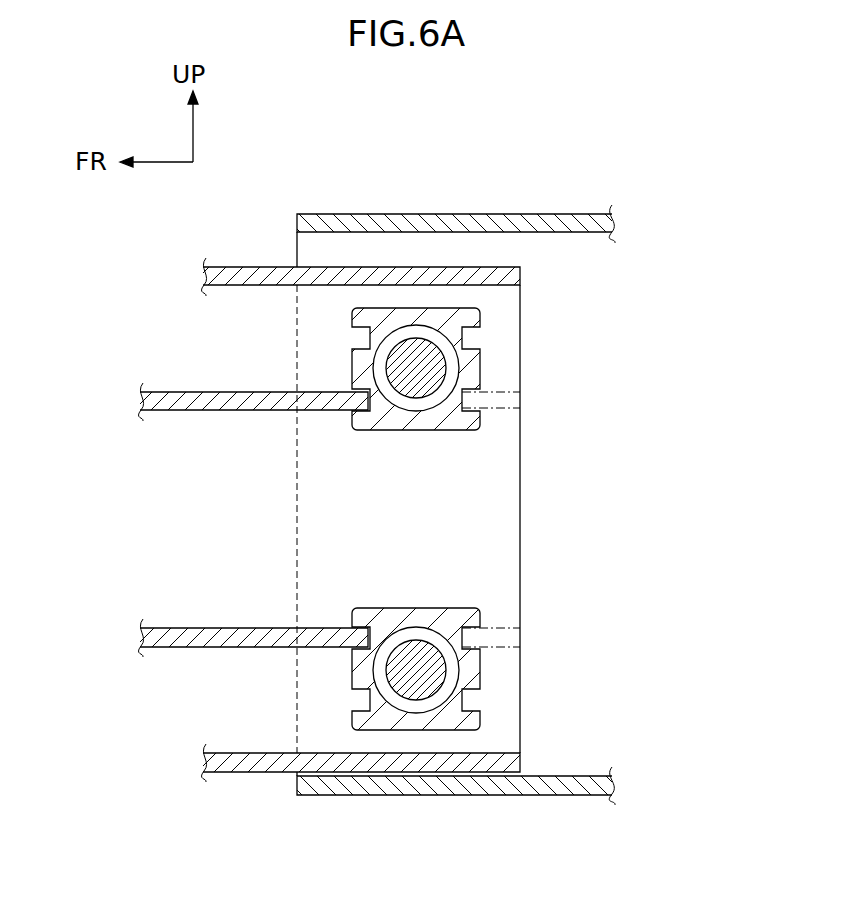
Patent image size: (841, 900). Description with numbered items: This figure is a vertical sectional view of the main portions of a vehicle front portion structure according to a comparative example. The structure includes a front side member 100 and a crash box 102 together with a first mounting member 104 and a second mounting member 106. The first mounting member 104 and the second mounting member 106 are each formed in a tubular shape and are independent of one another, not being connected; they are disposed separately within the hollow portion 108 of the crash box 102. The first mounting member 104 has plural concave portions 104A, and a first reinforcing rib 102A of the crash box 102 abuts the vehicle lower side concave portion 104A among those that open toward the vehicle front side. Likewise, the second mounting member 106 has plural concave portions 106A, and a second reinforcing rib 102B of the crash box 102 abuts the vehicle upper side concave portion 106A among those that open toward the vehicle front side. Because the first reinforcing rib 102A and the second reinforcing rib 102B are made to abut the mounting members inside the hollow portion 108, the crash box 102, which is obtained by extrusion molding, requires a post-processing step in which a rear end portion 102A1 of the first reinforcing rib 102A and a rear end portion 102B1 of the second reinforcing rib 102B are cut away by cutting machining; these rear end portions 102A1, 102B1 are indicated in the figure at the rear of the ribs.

The front side member 100 is at (503, 202).
The crash box 102 is at (246, 238).
The first reinforcing rib 102A is at (168, 390).
The rear end portion of the first reinforcing rib 102A1 is at (486, 410).
The second reinforcing rib 102B is at (162, 650).
The rear end portion of the second reinforcing rib 102B1 is at (485, 650).
The first mounting member 104 is at (423, 370).
The concave portion 104A is at (365, 337).
The second mounting member 106 is at (421, 657).
The concave portion 106A is at (350, 627).
The hollow portion 108 is at (445, 522).